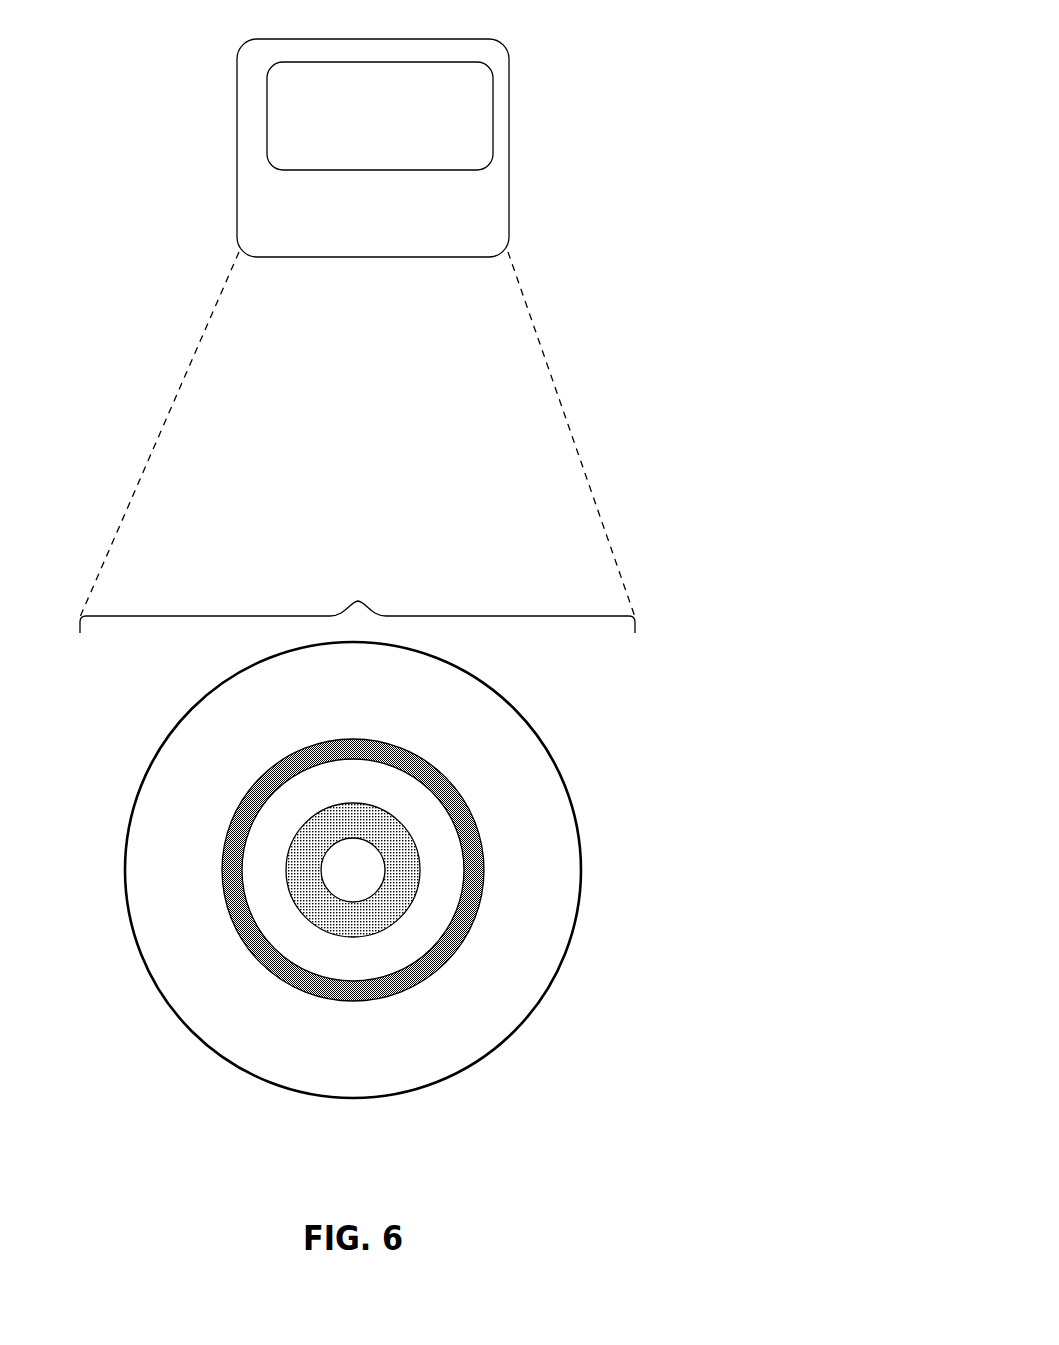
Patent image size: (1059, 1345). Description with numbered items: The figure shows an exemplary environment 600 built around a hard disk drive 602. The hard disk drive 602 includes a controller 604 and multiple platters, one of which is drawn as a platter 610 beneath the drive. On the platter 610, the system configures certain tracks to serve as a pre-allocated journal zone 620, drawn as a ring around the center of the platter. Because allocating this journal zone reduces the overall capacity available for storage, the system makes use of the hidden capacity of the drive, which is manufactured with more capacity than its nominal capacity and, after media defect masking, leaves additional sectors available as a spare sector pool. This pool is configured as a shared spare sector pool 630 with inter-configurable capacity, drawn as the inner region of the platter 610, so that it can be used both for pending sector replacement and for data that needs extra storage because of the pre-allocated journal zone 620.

The environment 600 is at (657, 26).
The hard disk drive 602 is at (407, 221).
The controller 604 is at (453, 126).
The platter 610 is at (462, 698).
The pre-allocated journal zone 620 is at (433, 768).
The shared spare sector pool 630 is at (393, 923).